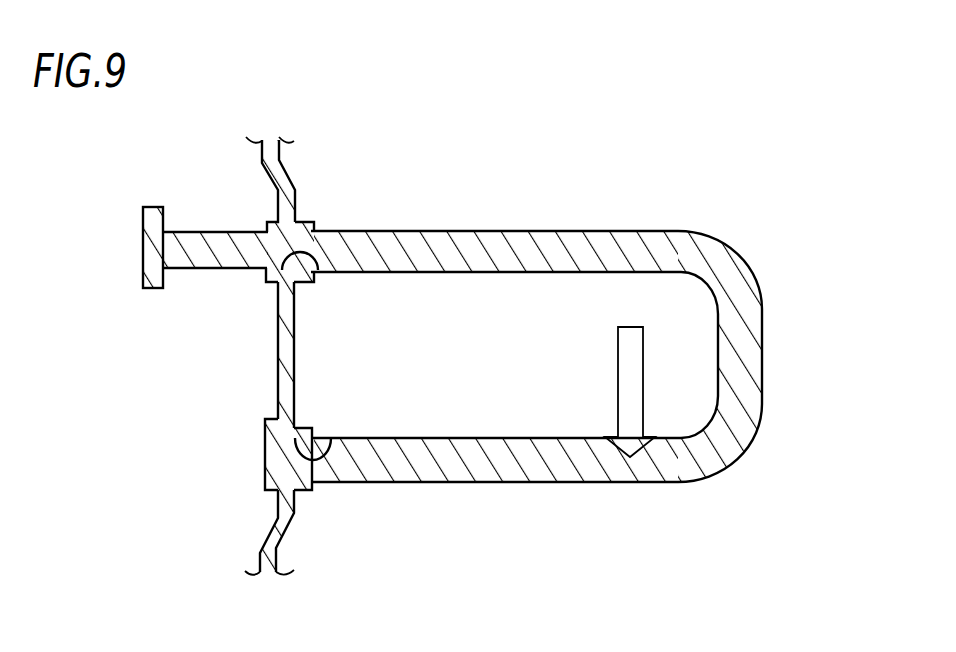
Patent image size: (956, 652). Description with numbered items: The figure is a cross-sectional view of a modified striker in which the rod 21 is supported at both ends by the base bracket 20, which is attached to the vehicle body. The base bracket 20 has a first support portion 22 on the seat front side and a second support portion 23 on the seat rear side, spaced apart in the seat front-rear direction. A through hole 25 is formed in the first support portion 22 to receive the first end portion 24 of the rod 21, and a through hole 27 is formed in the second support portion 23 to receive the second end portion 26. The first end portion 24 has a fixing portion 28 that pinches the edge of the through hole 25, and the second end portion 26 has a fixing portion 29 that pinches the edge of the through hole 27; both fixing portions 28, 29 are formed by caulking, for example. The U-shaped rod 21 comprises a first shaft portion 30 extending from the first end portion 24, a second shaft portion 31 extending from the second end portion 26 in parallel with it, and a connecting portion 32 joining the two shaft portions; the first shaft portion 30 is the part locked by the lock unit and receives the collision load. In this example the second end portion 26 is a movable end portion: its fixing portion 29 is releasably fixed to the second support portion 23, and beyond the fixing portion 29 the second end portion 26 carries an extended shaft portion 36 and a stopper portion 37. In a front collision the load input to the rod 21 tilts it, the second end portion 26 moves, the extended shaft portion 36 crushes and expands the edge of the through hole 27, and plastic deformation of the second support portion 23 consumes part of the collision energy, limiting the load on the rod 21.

The base bracket 20 is at (257, 532).
The rod 21 is at (599, 351).
The first support portion 22 is at (295, 508).
The second support portion 23 is at (297, 198).
The first end portion 24 is at (223, 468).
The through hole 25 is at (330, 440).
The second end portion 26 is at (143, 219).
The through hole 27 is at (312, 254).
The fixing portion 28 is at (264, 496).
The fixing portion 29 is at (278, 278).
The first shaft portion 30 is at (510, 462).
The second shaft portion 31 is at (571, 245).
The connecting portion 32 is at (740, 362).
The extended shaft portion 36 is at (208, 242).
The stopper portion 37 is at (143, 282).